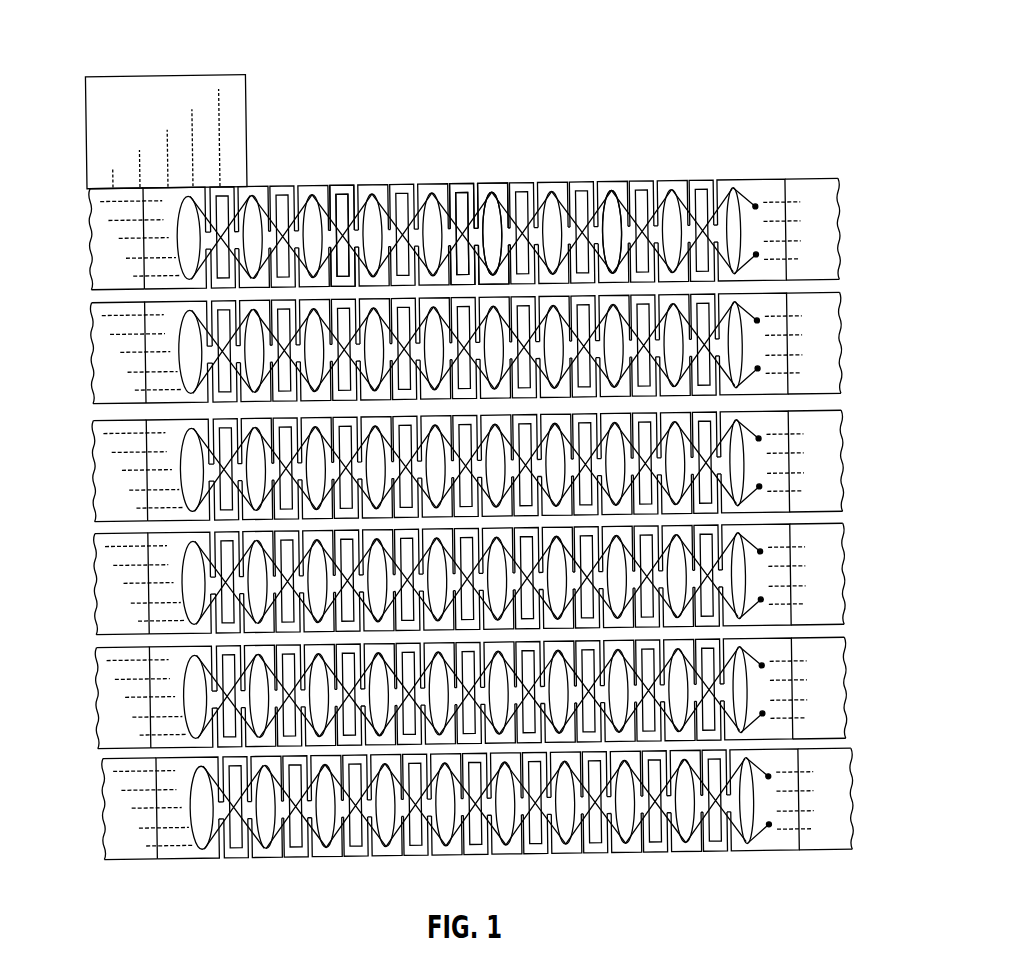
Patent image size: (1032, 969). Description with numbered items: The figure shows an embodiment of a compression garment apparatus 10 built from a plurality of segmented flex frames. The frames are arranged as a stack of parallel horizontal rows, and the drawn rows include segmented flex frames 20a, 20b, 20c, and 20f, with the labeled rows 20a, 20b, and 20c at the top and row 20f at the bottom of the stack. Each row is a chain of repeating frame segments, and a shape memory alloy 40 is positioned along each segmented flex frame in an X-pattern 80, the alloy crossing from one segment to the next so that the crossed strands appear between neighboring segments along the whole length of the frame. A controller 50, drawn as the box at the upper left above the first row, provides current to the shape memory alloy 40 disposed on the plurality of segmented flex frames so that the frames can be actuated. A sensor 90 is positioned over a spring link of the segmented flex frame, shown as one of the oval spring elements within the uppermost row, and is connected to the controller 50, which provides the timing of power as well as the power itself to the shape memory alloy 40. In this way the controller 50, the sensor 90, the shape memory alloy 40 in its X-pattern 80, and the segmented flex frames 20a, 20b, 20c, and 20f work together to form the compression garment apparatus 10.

The compression garment apparatus 10 is at (110, 42).
The controller 50 is at (237, 117).
The segmented flex frame 20a is at (499, 227).
The segmented flex frame 20b is at (500, 341).
The segmented flex frame 20c is at (501, 458).
The sixth module row 20f is at (507, 800).
The X-pattern 80 is at (342, 197).
The shape memory alloy 40 is at (462, 225).
The sensor 90 is at (607, 235).